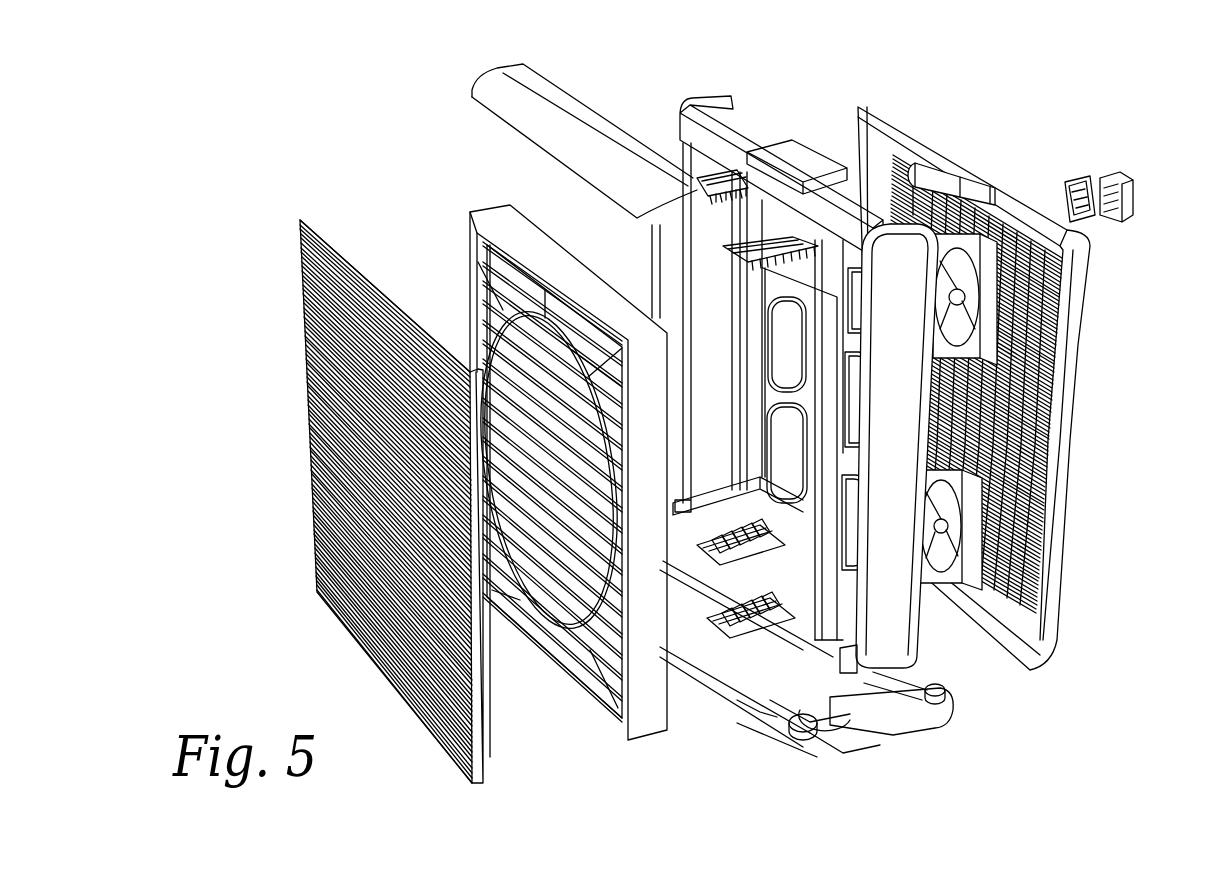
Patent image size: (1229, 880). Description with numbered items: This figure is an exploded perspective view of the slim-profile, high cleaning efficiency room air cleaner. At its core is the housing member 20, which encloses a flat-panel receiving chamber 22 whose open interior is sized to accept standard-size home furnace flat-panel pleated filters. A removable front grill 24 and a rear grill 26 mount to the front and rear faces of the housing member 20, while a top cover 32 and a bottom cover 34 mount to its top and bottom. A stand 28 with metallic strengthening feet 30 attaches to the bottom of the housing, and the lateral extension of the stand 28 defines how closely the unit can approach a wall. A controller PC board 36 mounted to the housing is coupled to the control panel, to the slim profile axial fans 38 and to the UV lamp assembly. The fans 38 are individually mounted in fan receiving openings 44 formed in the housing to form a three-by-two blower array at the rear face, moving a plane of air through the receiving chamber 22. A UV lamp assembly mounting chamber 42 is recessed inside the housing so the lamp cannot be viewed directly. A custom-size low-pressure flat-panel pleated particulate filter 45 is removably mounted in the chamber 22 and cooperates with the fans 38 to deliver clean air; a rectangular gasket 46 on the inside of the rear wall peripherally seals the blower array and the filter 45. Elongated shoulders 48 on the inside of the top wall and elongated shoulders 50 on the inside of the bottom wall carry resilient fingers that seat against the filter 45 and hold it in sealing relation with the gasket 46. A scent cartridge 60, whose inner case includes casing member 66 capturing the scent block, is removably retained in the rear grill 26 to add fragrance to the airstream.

The housing member 20 is at (905, 627).
The flat-panel receiving chamber 22 is at (700, 354).
The front grill 24 is at (345, 343).
The rear grill 26 is at (1072, 381).
The stand 28 is at (762, 752).
The metallic strengthening feet 30 is at (960, 714).
The top cover 32 is at (546, 85).
The bottom cover 34 is at (723, 677).
The controller PC board 36 is at (705, 593).
The slim profile axial fans 38 is at (988, 303).
The UV lamp assembly mounting chamber 42 is at (826, 389).
The fan receiving openings 44 is at (765, 307).
The low-pressure flat-panel pleated particulate filter 45 is at (473, 230).
The rectangular gasket 46 is at (820, 470).
The elongated shoulders 48 is at (690, 165).
The elongated shoulders 50 is at (684, 530).
The scent cartridge 60 is at (1074, 168).
The casing member 66 is at (1133, 202).